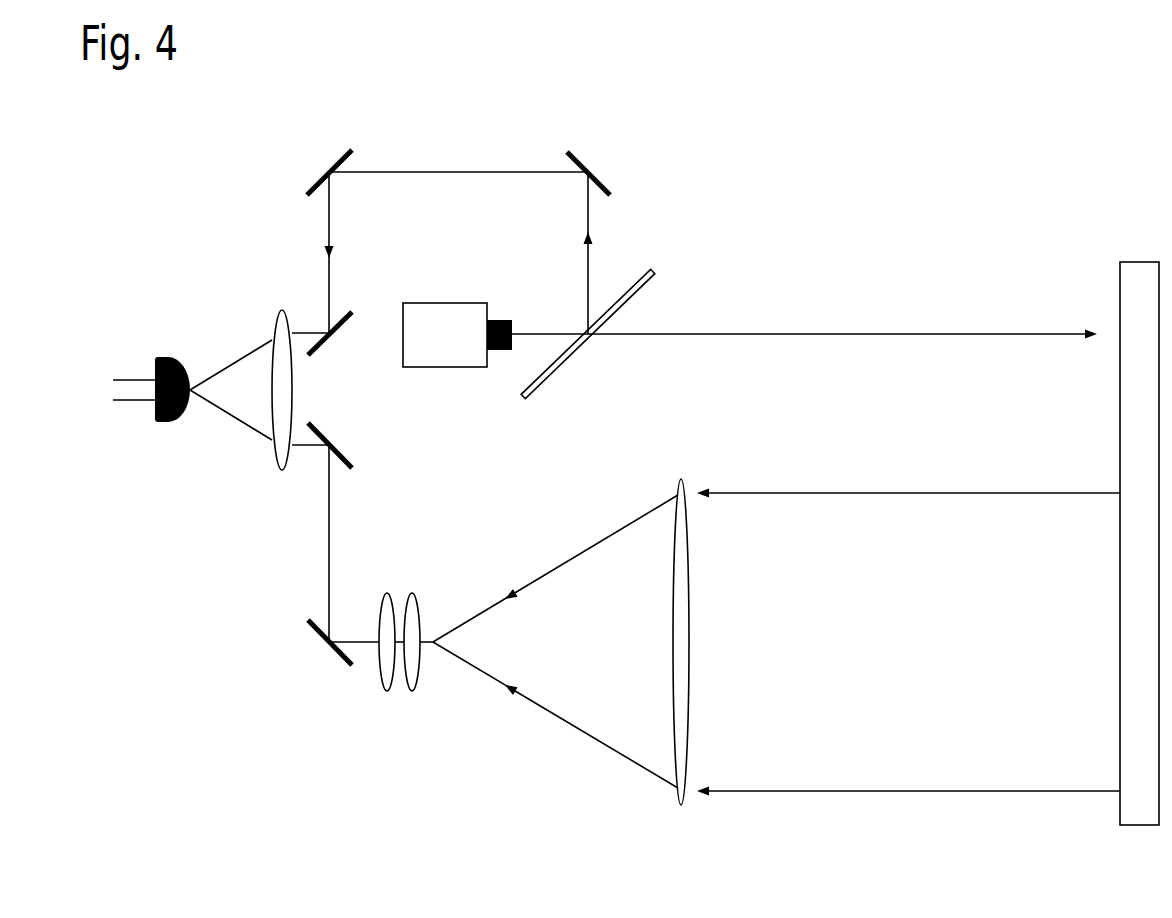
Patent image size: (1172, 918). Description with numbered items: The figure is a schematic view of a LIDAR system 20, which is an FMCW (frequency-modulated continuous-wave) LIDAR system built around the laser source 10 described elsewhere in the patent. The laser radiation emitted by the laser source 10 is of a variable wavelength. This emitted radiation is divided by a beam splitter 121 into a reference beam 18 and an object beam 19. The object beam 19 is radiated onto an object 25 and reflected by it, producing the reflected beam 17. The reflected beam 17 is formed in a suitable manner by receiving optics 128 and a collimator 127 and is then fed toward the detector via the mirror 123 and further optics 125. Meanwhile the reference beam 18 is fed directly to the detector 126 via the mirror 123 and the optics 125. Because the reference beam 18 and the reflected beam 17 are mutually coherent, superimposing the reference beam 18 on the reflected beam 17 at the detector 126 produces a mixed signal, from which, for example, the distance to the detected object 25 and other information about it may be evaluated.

The laser source 10 is at (445, 315).
The reflected beam 17 is at (915, 490).
The reference beam 18 is at (590, 217).
The object beam 19 is at (840, 333).
The LIDAR system 20 is at (772, 128).
The object 25 is at (1141, 275).
The beam splitter 121 is at (555, 378).
The mirror 123 is at (337, 158).
The optics 125 is at (277, 315).
The detector 126 is at (170, 425).
The collimator 127 is at (413, 693).
The receiving optics 128 is at (680, 808).